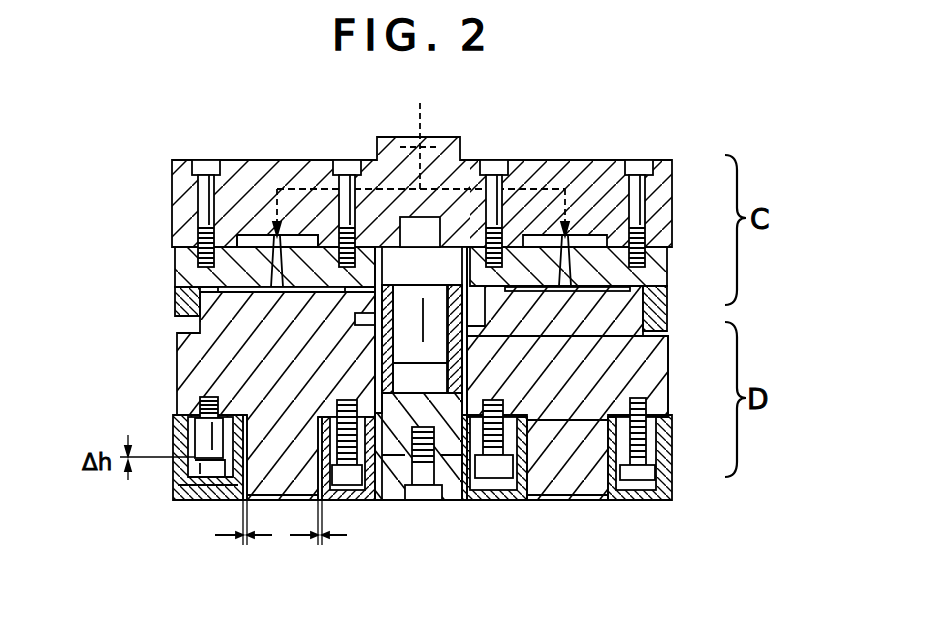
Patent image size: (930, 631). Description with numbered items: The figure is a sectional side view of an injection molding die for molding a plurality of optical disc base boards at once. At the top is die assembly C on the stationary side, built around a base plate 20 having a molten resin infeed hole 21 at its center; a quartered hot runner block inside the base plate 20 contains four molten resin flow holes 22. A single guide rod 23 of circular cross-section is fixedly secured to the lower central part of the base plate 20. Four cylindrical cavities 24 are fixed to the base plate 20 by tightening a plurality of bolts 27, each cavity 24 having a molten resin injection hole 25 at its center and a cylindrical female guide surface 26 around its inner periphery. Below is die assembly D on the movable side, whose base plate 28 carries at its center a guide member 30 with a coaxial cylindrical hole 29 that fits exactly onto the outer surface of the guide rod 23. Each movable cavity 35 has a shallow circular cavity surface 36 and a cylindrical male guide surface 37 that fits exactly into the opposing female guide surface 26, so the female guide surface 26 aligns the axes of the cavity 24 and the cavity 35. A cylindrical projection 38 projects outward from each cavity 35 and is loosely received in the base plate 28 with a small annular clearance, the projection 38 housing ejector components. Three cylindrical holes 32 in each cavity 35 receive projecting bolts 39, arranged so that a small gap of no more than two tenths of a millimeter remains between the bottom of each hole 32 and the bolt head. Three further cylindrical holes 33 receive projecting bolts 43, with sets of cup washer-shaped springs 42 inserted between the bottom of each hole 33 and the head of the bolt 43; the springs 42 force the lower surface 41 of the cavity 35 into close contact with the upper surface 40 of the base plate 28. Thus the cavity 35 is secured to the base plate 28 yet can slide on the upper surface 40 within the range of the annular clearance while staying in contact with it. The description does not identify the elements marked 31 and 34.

The base plate 20 is at (601, 175).
The molten resin infeed hole 21 is at (421, 135).
The molten resin flow holes 22 is at (545, 160).
The guide rod 23 is at (425, 300).
The cylindrical cavity 24 is at (196, 268).
The molten resin injection hole 25 is at (280, 287).
The cylindrical female guide surface 26 is at (196, 304).
The bolts 27 is at (200, 196).
The base plate 28 is at (672, 497).
The cylindrical hole 29 is at (590, 338).
The guide member 30 is at (590, 355).
The center screw 31 is at (420, 485).
The cylindrical holes 32 is at (197, 500).
The cylindrical holes 33 is at (338, 492).
The right clamp piece 34 is at (525, 495).
The cavity 35 is at (178, 368).
The circular cavity surface 36 is at (250, 287).
The cylindrical male guide surface 37 is at (655, 302).
The cylindrical projection 38 is at (283, 492).
The projecting bolts 39 is at (183, 482).
The upper surface 40 is at (200, 406).
The lower surface 41 is at (255, 492).
The cup washer-shaped springs 42 is at (672, 452).
The projecting bolts 43 is at (636, 480).